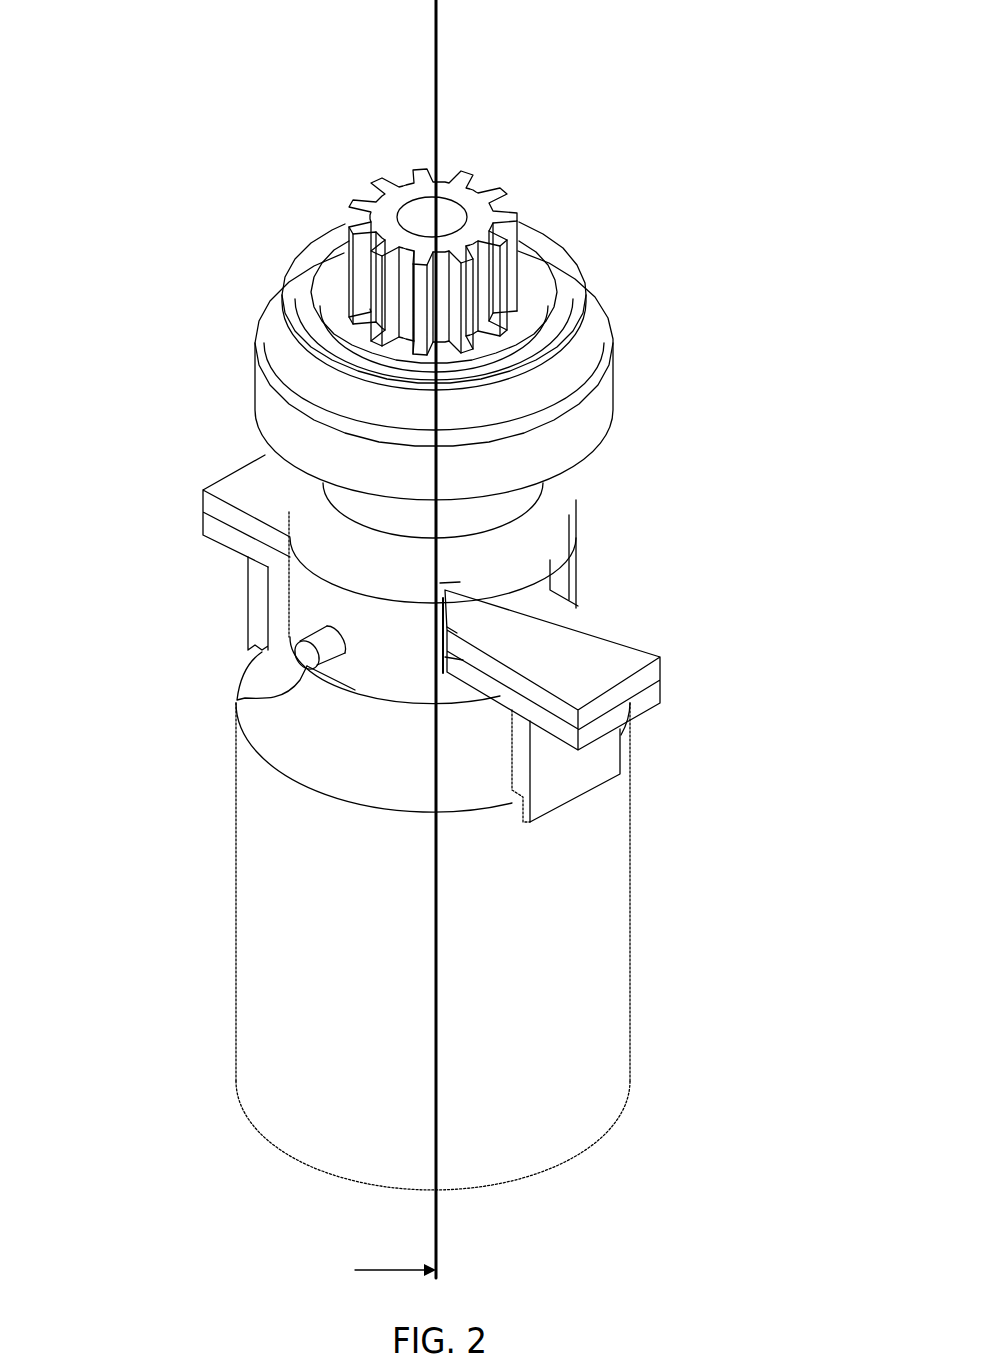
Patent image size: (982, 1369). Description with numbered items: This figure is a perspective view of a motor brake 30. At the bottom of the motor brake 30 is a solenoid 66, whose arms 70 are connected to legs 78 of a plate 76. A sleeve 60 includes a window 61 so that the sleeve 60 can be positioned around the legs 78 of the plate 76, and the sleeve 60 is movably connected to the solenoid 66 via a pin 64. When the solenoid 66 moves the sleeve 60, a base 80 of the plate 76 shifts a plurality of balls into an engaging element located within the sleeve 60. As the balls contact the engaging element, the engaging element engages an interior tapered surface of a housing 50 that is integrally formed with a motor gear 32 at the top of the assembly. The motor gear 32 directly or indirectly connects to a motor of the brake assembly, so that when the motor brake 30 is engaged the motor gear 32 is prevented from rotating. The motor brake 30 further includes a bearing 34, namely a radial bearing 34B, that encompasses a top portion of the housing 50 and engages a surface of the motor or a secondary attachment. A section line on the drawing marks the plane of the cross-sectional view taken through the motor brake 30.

The motor brake 30 is at (190, 142).
The motor gear 32 is at (460, 218).
The bearing 34 is at (282, 285).
The radial bearing 34B is at (434, 306).
The housing 50 is at (527, 307).
The sleeve 60 is at (557, 510).
The window 61 is at (452, 630).
The pin 64 is at (312, 658).
The solenoid 66 is at (618, 1027).
The arm 70 is at (217, 530).
The plate 76 is at (620, 620).
The leg 78 is at (257, 477).
The base 80 is at (522, 580).